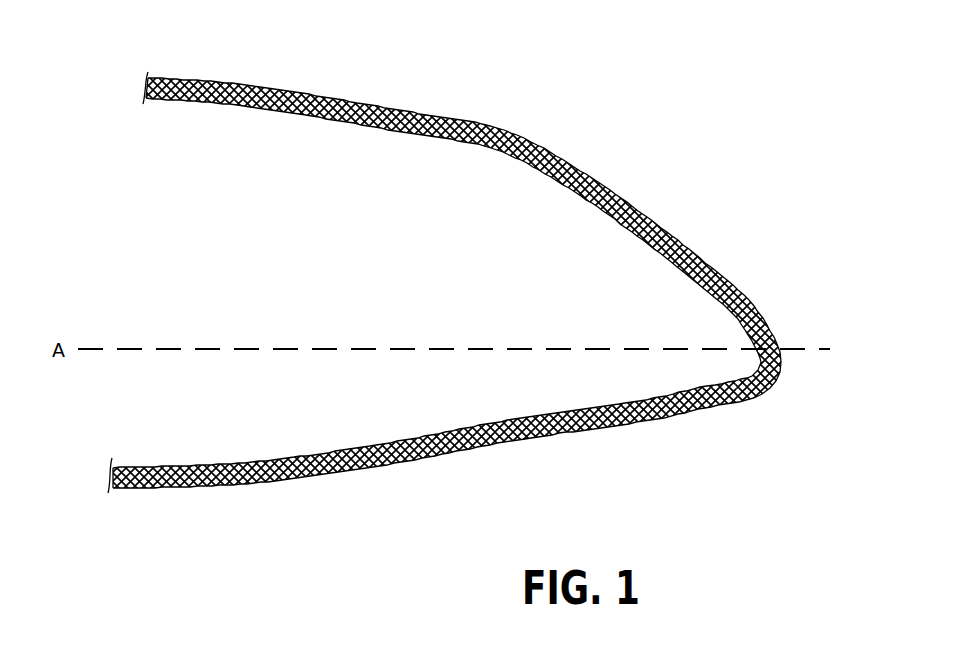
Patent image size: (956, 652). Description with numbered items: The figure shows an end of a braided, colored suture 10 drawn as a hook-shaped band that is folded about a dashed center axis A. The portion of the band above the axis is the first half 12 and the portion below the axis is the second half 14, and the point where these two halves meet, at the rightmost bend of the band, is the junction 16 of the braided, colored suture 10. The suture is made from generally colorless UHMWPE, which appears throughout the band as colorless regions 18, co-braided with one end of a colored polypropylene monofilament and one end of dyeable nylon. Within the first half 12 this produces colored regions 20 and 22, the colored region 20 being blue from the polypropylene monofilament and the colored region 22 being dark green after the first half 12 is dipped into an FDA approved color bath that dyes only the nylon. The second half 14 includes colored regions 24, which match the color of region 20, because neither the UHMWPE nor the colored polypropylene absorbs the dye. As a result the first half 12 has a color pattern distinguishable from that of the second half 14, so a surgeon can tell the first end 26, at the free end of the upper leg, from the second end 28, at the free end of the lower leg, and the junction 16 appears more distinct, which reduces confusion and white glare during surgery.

The braided, colored suture 10 is at (473, 283).
The first half 12 is at (443, 162).
The second half 14 is at (423, 466).
The junction 16 is at (787, 352).
The colorless regions 18 is at (473, 283).
The colored region 20 is at (478, 128).
The colored region 22 is at (500, 152).
The colored regions 24 is at (253, 485).
The first end 26 is at (156, 78).
The second end 28 is at (130, 489).